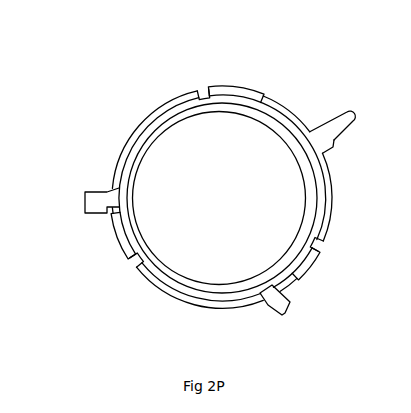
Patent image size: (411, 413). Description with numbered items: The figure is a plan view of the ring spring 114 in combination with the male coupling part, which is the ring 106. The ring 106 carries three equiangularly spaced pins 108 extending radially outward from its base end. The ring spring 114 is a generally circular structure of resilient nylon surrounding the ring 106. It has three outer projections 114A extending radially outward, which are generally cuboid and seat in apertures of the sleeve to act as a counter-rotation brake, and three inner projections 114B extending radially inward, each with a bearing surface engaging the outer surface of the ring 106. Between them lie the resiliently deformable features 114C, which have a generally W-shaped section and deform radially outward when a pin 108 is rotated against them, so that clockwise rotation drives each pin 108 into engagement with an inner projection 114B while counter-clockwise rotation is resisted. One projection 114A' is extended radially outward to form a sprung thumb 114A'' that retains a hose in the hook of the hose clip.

The ring 106 is at (148, 144).
The pins 108 is at (235, 92).
The ring spring 114 is at (287, 112).
The outer projections 114A is at (147, 266).
The projection 114A' is at (361, 166).
The sprung thumb 114A'' is at (360, 111).
The inner projections 114B is at (118, 202).
The resiliently deformable features 114C is at (203, 92).